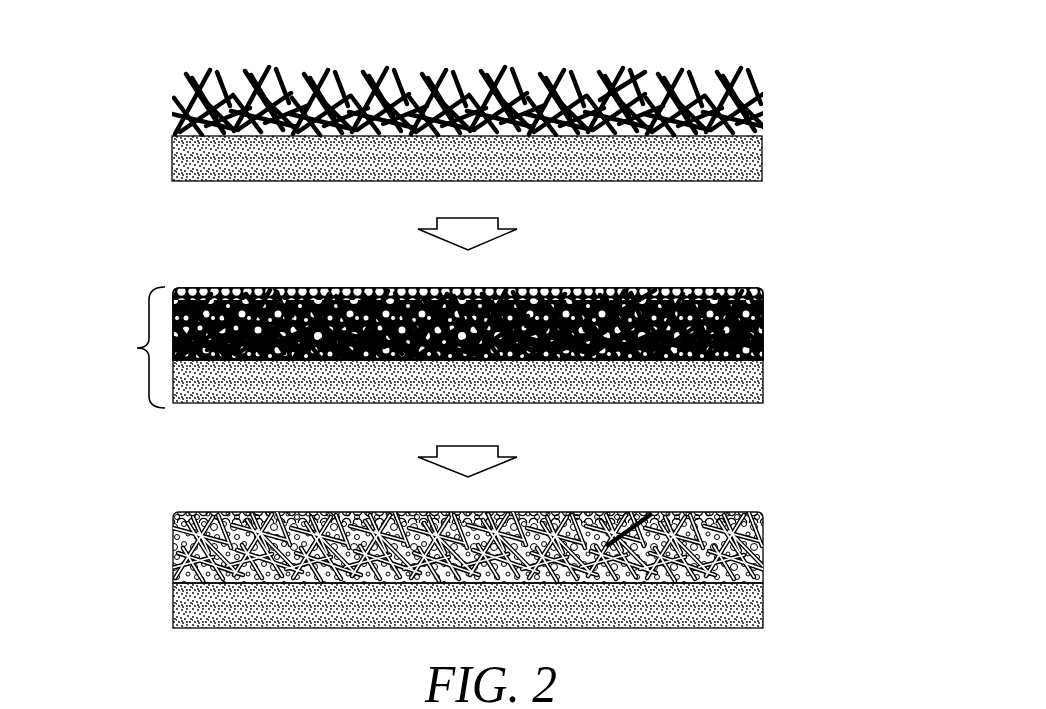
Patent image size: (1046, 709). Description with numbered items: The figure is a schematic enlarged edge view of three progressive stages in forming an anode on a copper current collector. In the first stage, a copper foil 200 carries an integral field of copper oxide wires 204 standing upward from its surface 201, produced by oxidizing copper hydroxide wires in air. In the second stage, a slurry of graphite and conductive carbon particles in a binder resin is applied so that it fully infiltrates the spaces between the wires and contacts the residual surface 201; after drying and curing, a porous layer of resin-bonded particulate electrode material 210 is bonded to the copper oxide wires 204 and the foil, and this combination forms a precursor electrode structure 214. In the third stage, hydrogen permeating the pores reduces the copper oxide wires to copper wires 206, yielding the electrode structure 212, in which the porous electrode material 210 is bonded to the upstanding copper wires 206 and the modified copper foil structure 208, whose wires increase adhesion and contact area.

The copper foil 200 is at (762, 160).
The surface 201 is at (723, 133).
The copper oxide wires 204 is at (622, 82).
The copper wires 206 is at (628, 527).
The modified copper foil structure 208 is at (160, 591).
The resin-bonded particulate electrode material 210 is at (735, 288).
The electrode structure 212 is at (160, 550).
The precursor electrode structure 214 is at (137, 348).